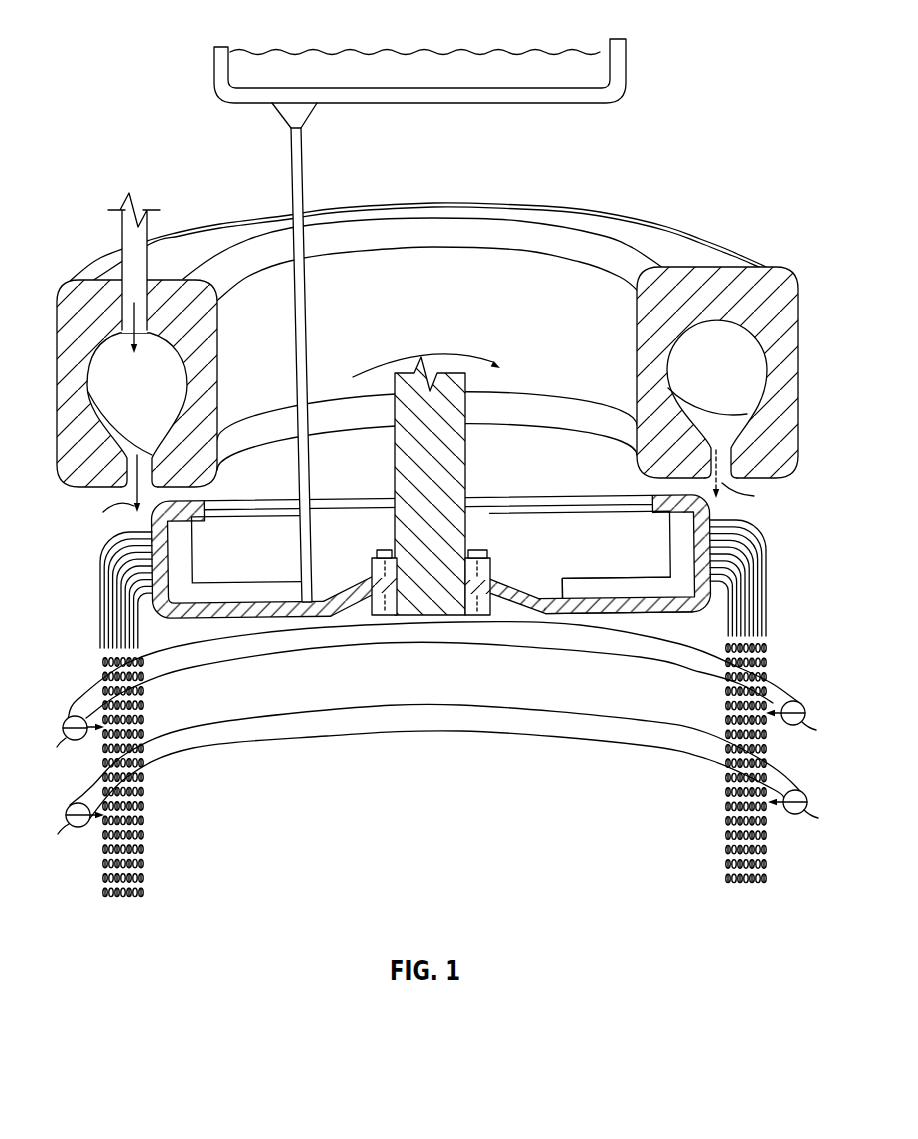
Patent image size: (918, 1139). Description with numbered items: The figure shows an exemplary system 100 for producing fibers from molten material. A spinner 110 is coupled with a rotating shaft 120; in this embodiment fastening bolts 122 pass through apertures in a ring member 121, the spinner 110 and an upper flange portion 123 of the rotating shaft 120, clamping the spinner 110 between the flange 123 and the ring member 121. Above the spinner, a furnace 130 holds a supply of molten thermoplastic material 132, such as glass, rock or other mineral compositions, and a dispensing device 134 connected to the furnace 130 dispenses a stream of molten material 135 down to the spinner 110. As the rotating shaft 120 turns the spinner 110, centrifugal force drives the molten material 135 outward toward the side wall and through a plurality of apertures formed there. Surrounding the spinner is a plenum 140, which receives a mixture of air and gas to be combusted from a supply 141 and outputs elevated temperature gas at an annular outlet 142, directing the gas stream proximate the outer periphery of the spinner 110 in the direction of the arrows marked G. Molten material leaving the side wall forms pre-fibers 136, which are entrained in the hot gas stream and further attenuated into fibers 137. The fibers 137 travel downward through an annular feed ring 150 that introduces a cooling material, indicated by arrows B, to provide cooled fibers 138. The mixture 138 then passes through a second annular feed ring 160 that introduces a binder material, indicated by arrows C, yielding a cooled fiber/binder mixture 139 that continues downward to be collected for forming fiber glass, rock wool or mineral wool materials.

The system 100 is at (150, 52).
The spinner 110 is at (512, 500).
The rotating shaft 120 is at (396, 471).
The ring member 121 is at (491, 573).
The fastening bolts 122 is at (384, 550).
The upper flange portion 123 is at (533, 597).
The furnace 130 is at (511, 101).
The molten thermoplastic material 132 is at (301, 50).
The dispensing device 134 is at (315, 113).
The stream of molten material 135 is at (305, 189).
The pre-fibers 136 is at (88, 563).
The fibers 137 is at (88, 661).
The cooled fibers 138 is at (88, 765).
The cooled fiber/binder mixture 139 is at (93, 876).
The plenum 140 is at (72, 283).
The supply 141 is at (149, 229).
The annular outlet 142 is at (147, 458).
The annular feed ring 150 is at (307, 652).
The annular feed ring 160 is at (327, 713).